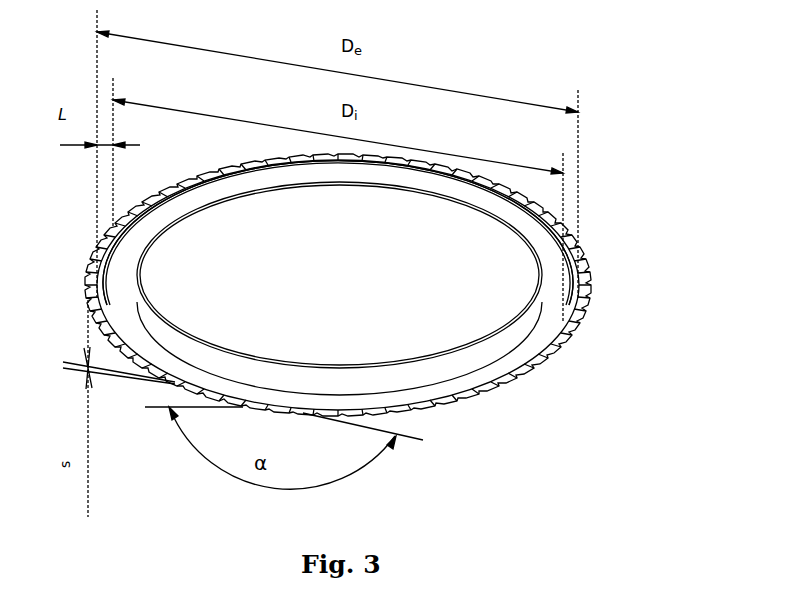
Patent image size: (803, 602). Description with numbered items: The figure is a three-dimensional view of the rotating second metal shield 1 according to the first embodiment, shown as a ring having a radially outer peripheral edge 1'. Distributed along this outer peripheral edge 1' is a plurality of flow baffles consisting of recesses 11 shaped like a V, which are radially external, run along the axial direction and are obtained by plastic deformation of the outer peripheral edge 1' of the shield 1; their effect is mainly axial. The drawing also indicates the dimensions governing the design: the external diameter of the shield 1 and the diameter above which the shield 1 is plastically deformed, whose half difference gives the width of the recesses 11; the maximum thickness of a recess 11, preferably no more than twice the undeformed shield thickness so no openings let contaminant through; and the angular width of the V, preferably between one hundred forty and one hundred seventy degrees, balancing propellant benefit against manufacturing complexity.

The second metal shield 1 is at (398, 262).
The radially outer peripheral edge 1' is at (338, 238).
The recesses 11 is at (123, 223).